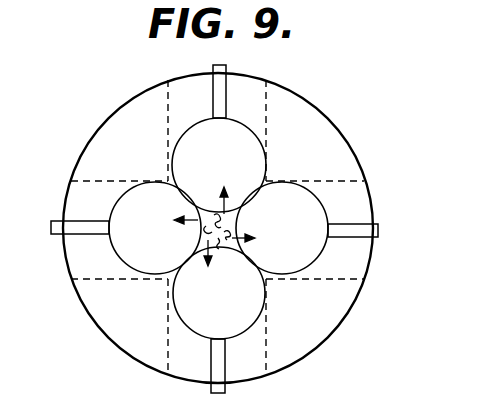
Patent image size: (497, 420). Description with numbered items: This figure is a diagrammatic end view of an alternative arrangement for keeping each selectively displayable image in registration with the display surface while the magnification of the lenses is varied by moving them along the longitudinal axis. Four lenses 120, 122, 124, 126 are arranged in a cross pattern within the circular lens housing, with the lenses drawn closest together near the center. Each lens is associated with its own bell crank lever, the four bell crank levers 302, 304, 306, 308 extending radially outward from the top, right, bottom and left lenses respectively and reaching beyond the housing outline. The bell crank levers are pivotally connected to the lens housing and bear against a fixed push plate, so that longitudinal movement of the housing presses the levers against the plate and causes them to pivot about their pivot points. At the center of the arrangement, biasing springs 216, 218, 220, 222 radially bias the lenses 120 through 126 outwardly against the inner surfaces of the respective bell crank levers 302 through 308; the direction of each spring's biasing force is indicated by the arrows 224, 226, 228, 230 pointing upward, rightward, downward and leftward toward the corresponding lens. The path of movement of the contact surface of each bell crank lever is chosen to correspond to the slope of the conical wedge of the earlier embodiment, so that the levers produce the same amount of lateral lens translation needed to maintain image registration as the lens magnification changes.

The lens 120 is at (266, 132).
The lens 122 is at (315, 250).
The lens 124 is at (263, 316).
The lens 126 is at (140, 267).
The biasing spring 216 is at (212, 212).
The biasing spring 218 is at (232, 226).
The biasing spring 220 is at (226, 246).
The biasing spring 222 is at (201, 237).
The biasing force direction arrow 224 is at (228, 192).
The biasing force direction arrow 226 is at (251, 239).
The biasing force direction arrow 228 is at (205, 262).
The biasing force direction arrow 230 is at (188, 218).
The bell crank lever 302 is at (228, 70).
The bell crank lever 304 is at (378, 236).
The bell crank lever 306 is at (210, 389).
The bell crank lever 308 is at (52, 235).